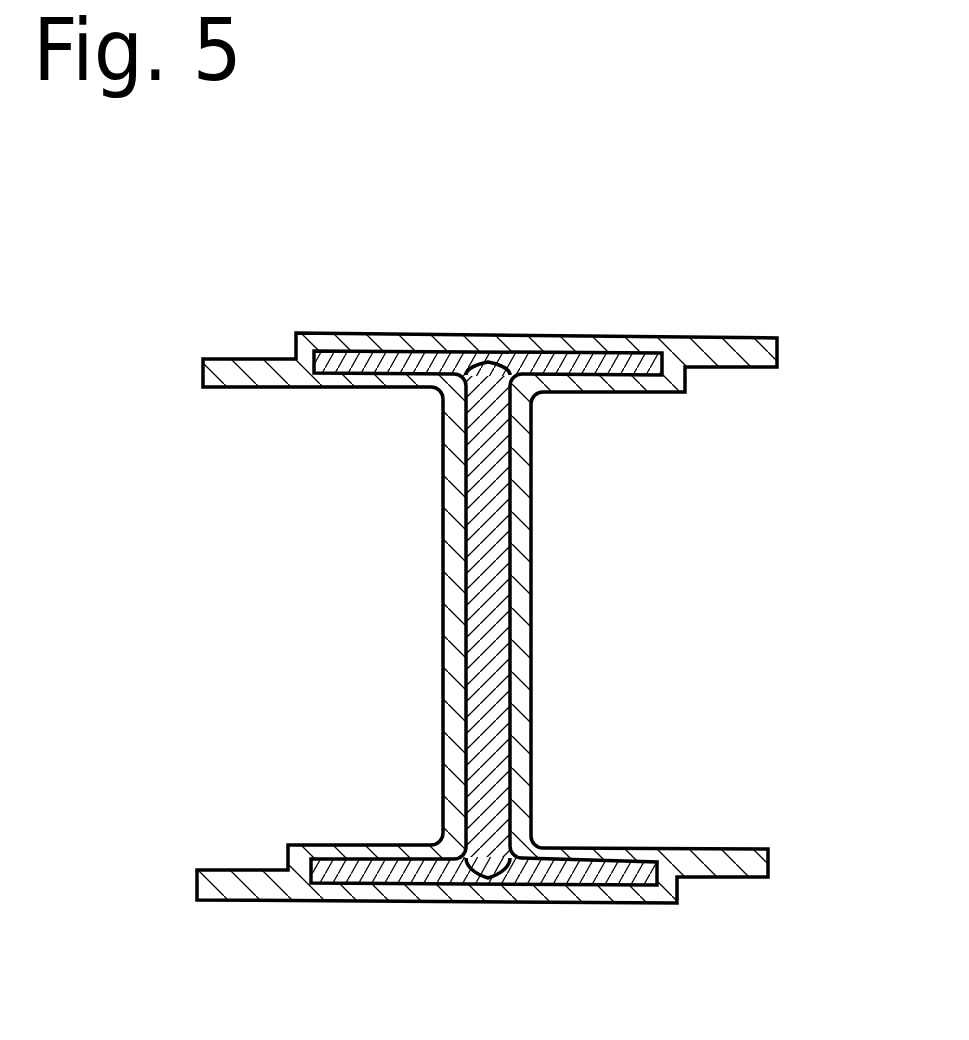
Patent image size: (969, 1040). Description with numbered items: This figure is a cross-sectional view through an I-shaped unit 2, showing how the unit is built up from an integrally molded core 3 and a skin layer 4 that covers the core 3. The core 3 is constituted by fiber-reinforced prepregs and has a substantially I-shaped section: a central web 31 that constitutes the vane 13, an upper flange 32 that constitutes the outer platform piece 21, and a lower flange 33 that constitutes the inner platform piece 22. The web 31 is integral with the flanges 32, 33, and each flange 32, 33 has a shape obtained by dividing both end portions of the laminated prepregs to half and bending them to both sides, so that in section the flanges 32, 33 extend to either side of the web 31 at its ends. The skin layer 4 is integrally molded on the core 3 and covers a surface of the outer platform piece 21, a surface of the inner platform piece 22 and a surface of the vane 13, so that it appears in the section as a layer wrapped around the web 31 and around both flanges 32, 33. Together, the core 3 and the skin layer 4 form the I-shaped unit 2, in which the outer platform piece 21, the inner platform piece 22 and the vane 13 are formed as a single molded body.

The I-shaped unit 2 is at (532, 596).
The core 3 is at (487, 616).
The web 31 is at (505, 558).
The flange 32 is at (602, 365).
The flange 33 is at (596, 875).
The outer platform piece 21 is at (337, 340).
The inner platform piece 22 is at (338, 892).
The vane 13 is at (530, 692).
The skin layer 4 is at (447, 523).